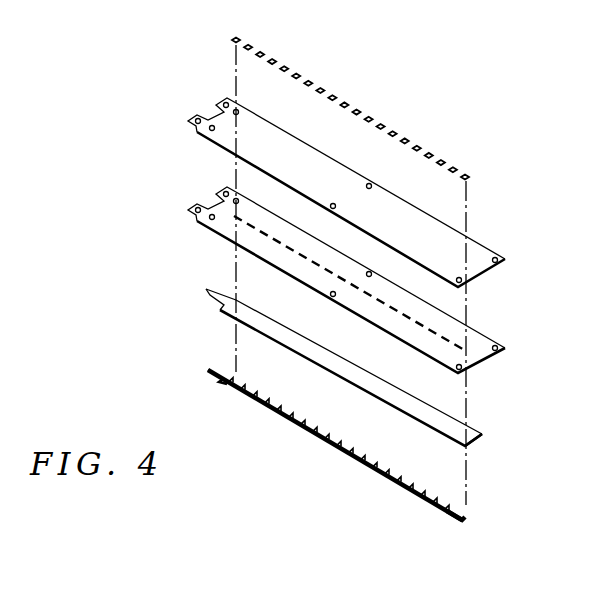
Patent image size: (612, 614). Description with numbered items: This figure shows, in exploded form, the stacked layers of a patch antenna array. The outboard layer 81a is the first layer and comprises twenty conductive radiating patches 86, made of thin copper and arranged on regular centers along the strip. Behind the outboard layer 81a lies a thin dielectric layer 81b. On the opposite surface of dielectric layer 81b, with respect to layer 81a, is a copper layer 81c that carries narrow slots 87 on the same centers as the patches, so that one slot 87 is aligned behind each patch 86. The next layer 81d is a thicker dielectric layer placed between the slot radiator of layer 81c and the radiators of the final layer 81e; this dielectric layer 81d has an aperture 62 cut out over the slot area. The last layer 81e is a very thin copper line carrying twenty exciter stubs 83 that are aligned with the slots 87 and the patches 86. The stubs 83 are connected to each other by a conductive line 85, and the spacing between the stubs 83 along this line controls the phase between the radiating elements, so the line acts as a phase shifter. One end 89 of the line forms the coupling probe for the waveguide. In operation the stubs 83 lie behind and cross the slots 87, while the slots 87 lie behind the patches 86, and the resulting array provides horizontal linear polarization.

The outboard layer 81a is at (170, 32).
The dielectric layer 81b is at (170, 107).
The copper layer with slots 81c is at (308, 270).
The dielectric layer 81d is at (308, 352).
The copper line layer 81e is at (281, 447).
The conductive radiating patches 86 is at (284, 66).
The slots 87 is at (248, 223).
The aperture 62 is at (448, 422).
The exciter stubs 83 is at (279, 415).
The one end of the line 89 is at (216, 370).
The conductive line 85 is at (444, 519).